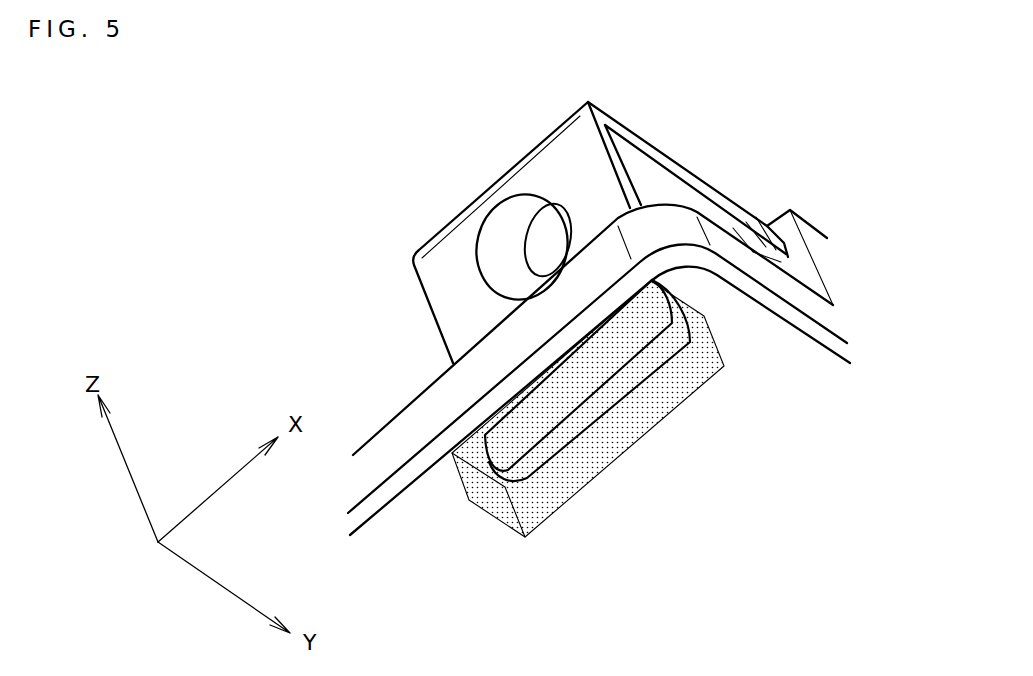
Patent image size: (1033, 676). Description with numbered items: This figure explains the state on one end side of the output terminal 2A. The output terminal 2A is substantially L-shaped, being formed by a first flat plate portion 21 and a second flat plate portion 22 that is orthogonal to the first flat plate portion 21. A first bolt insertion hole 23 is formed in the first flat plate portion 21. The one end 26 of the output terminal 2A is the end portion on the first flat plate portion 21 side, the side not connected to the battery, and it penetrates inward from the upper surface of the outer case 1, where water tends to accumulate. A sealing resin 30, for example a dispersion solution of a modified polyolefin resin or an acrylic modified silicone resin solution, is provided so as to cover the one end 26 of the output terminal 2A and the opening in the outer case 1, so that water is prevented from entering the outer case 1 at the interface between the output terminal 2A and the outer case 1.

The outer case 1 is at (813, 195).
The output terminal 2A is at (523, 197).
The first flat plate portion 21 is at (465, 207).
The second flat plate portion 22 is at (674, 155).
The first bolt insertion hole 23 is at (520, 220).
The one end 26 is at (703, 372).
The sealing resin 30 is at (603, 473).